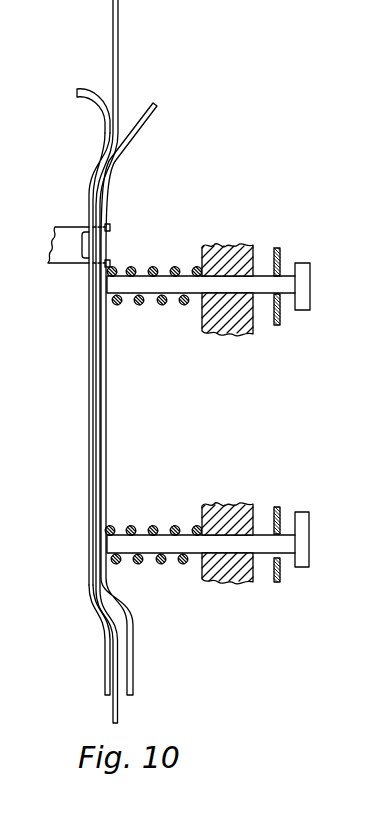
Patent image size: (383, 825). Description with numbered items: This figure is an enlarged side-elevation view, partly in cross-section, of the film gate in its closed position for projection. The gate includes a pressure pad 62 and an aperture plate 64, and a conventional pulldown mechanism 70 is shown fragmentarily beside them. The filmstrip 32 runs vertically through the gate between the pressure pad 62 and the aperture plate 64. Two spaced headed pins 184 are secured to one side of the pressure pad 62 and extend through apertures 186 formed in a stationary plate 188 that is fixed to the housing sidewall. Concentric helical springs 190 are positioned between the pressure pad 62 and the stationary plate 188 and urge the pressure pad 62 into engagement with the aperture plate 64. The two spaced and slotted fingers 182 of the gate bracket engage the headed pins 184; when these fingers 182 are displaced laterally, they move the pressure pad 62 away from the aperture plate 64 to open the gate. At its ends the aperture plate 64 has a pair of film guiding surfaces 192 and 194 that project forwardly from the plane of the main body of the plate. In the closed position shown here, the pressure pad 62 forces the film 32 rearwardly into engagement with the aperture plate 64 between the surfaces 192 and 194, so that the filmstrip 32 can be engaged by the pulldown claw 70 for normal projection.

The filmstrip 32 is at (118, 43).
The pressure pad 62 is at (103, 416).
The aperture plate 64 is at (89, 416).
The pulldown mechanism 70 is at (65, 228).
The slotted fingers 182 is at (280, 258).
The headed pins 184 is at (306, 283).
The apertures 186 is at (238, 252).
The stationary plate 188 is at (237, 332).
The helical springs 190 is at (140, 306).
The film guiding surface 192 is at (105, 115).
The film guiding surface 194 is at (105, 655).